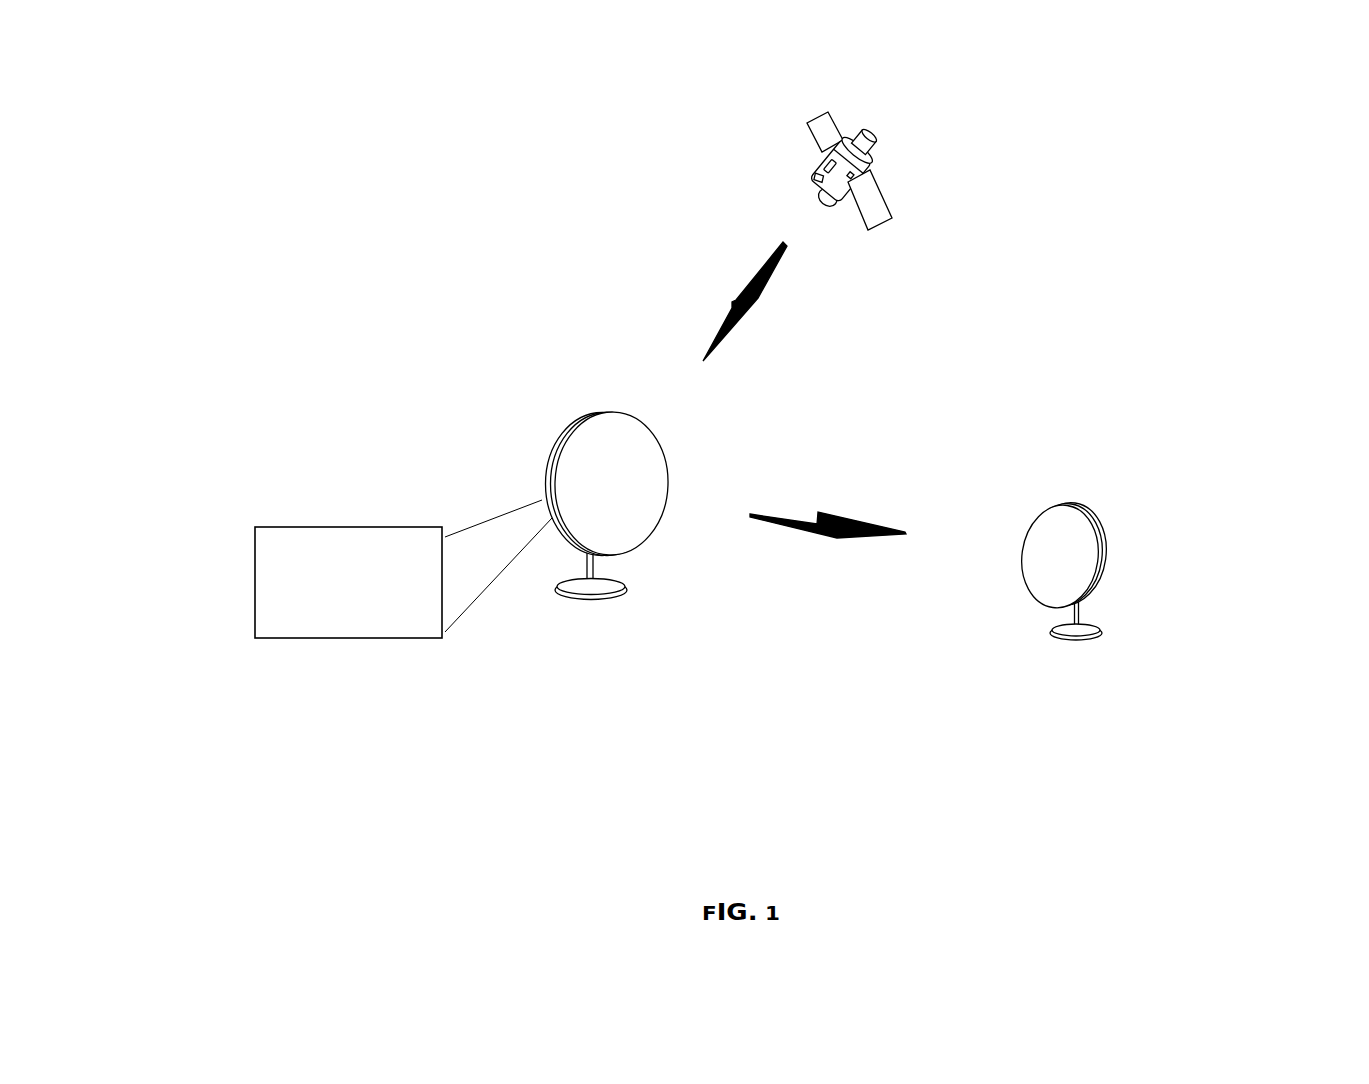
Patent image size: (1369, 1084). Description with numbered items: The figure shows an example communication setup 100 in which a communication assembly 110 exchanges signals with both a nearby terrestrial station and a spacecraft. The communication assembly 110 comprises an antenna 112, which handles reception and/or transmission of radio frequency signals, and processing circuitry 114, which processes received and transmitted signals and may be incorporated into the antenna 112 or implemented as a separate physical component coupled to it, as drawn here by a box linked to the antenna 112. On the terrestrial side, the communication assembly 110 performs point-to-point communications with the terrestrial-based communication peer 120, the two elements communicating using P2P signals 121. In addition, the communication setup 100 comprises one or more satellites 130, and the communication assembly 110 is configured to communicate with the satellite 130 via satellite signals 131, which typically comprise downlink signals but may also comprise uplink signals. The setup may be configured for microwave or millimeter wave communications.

The communication setup 100 is at (334, 134).
The communication assembly 110 is at (601, 539).
The antenna 112 is at (601, 411).
The processing circuitry 114 is at (330, 618).
The communication peer 120 is at (1062, 730).
The P2P signals 121 is at (814, 616).
The satellite 130 is at (950, 202).
The satellite signals 131 is at (828, 362).